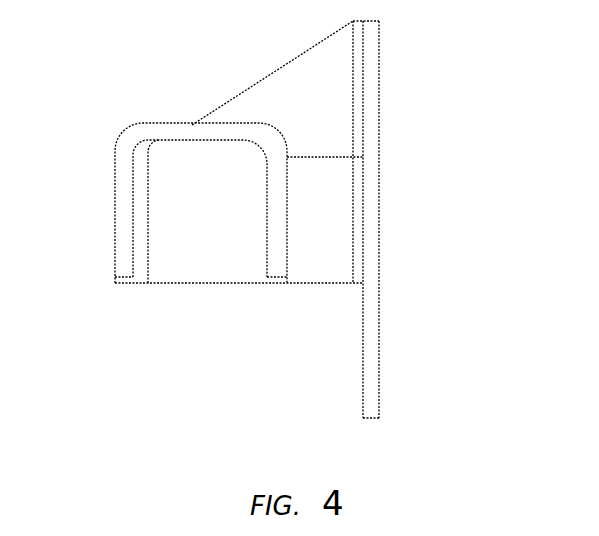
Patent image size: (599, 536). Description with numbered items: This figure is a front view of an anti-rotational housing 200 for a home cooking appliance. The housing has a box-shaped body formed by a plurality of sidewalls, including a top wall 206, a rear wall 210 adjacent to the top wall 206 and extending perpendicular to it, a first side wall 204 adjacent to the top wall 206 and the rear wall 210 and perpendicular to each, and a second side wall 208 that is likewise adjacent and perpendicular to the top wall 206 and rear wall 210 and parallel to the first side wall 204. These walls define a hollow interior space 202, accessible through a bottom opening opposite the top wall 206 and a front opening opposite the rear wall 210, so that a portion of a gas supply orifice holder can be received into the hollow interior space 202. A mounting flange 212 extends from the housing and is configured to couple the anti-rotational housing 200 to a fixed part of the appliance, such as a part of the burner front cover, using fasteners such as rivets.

The anti-rotational housing 200 is at (501, 389).
The hollow interior space 202 is at (204, 316).
The first side wall 204 is at (265, 228).
The top wall 206 is at (157, 121).
The second side wall 208 is at (115, 196).
The rear wall 210 is at (282, 66).
The mounting flange 212 is at (380, 146).